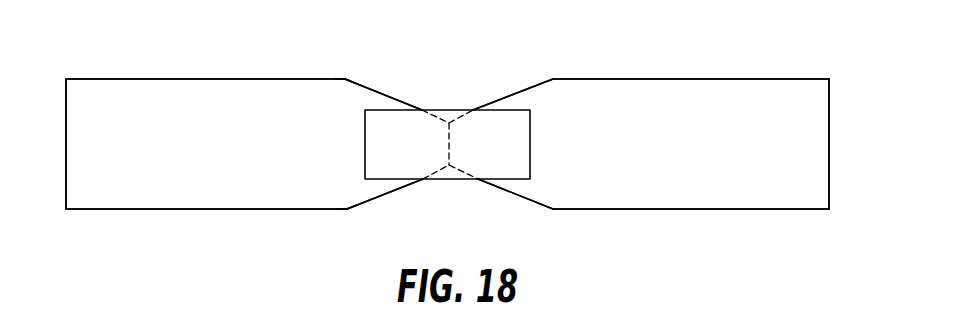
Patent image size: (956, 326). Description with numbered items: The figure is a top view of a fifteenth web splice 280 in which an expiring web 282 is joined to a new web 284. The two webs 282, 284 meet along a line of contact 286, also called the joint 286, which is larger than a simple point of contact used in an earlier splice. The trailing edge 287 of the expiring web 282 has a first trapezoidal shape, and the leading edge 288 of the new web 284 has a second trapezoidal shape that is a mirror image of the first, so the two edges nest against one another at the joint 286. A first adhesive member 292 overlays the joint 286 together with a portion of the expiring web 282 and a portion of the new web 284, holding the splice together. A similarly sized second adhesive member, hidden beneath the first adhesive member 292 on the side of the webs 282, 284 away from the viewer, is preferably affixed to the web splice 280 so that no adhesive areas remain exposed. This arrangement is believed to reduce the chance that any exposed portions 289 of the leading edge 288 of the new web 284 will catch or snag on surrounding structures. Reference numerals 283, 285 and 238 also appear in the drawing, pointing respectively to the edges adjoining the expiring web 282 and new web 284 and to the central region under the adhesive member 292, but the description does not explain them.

The web splice 280 is at (145, 56).
The expiring web 282 is at (775, 198).
The second end edges 283 is at (698, 79).
The new web 284 is at (155, 190).
The first end edges 285 is at (263, 78).
The line of contact 286 is at (449, 143).
The trailing edge 287 is at (515, 95).
The leading edge 288 is at (397, 98).
The exposed portions 289 is at (358, 85).
The first adhesive member 292 is at (448, 110).
The central region 238 is at (393, 144).